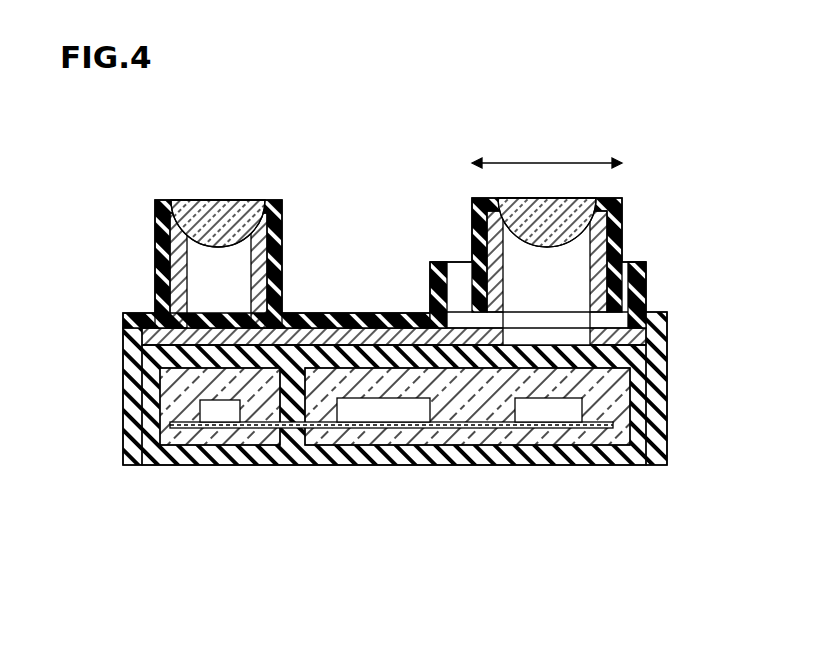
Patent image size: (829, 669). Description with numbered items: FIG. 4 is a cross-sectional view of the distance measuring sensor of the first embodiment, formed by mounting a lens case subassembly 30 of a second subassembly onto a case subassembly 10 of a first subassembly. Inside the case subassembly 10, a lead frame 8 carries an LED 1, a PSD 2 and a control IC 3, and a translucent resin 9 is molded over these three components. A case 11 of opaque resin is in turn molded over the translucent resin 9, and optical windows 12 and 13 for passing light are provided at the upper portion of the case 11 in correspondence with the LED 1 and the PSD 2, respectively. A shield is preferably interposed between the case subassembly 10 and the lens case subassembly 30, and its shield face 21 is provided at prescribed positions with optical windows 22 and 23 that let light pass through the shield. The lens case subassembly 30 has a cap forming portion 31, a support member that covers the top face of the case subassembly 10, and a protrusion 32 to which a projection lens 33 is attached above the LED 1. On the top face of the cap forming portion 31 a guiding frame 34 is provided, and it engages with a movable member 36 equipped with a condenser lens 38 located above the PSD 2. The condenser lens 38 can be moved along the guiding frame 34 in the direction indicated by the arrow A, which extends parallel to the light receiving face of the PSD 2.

The LED 1 is at (220, 413).
The PSD 2 is at (547, 410).
The control IC 3 is at (385, 410).
The lead frame 8 is at (600, 429).
The translucent resin 9 is at (182, 387).
The case subassembly 10 is at (335, 480).
The case 11 is at (170, 457).
The optical window 12 is at (232, 358).
The optical window 13 is at (527, 355).
The shield face 21 is at (650, 334).
The optical window 22 is at (212, 333).
The optical window 23 is at (528, 335).
The lens case subassembly 30 is at (325, 302).
The cap forming portion 31 is at (388, 327).
The protrusion 32 is at (165, 250).
The projection lens 33 is at (218, 222).
The guiding frame 34 is at (637, 294).
The movable member 36 is at (612, 240).
The condenser lens 38 is at (570, 199).
The arrow A is at (547, 152).